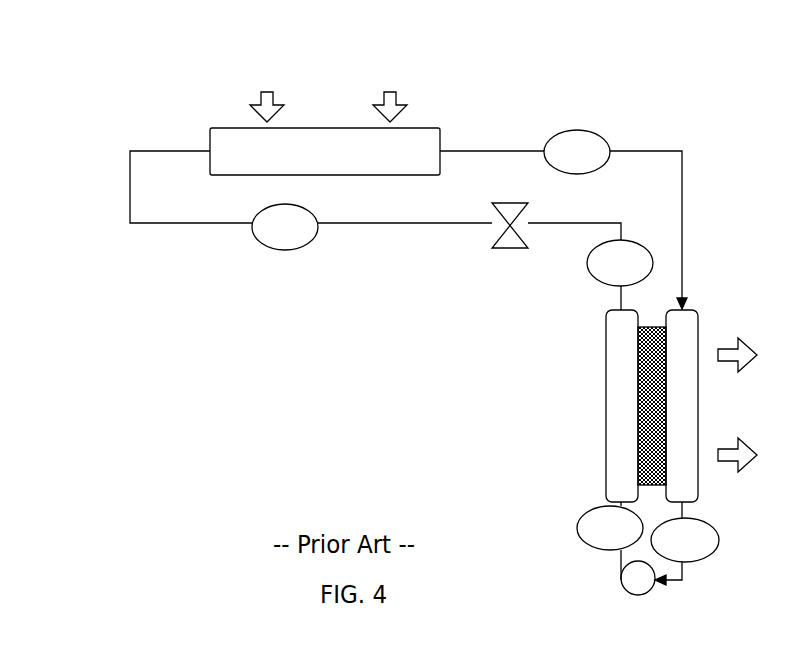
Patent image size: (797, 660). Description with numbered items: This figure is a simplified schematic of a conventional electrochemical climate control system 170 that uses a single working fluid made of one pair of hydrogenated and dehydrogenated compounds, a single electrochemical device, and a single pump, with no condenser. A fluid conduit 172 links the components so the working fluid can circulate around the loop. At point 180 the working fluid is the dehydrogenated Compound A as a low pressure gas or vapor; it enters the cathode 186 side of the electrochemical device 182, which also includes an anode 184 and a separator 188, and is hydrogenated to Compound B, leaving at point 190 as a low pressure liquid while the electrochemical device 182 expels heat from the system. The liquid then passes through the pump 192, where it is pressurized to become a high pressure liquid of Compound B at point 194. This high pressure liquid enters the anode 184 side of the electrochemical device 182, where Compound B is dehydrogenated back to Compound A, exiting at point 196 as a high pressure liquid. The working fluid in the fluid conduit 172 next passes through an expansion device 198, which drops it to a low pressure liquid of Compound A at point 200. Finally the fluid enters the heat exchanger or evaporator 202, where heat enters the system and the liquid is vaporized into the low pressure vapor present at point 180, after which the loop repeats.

The electrochemical climate control system 170 is at (105, 97).
The fluid conduit 172 is at (128, 188).
The point 180 is at (560, 162).
The electrochemical device 182 is at (688, 310).
The anode 184 is at (627, 387).
The cathode 186 is at (688, 428).
The separator 188 is at (637, 450).
The point 190 is at (668, 550).
The pump 192 is at (636, 583).
The point 194 is at (593, 538).
The point 196 is at (603, 273).
The expansion device 198 is at (506, 252).
The point 200 is at (268, 237).
The evaporator 202 is at (308, 161).